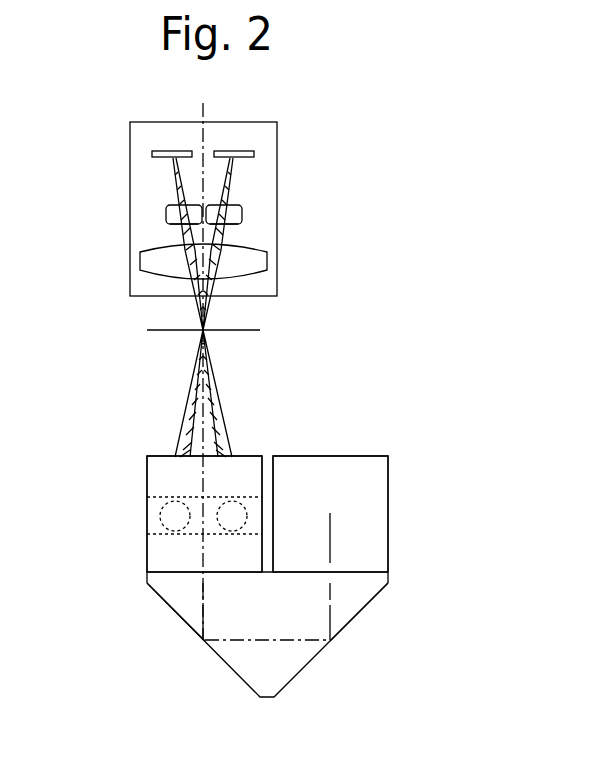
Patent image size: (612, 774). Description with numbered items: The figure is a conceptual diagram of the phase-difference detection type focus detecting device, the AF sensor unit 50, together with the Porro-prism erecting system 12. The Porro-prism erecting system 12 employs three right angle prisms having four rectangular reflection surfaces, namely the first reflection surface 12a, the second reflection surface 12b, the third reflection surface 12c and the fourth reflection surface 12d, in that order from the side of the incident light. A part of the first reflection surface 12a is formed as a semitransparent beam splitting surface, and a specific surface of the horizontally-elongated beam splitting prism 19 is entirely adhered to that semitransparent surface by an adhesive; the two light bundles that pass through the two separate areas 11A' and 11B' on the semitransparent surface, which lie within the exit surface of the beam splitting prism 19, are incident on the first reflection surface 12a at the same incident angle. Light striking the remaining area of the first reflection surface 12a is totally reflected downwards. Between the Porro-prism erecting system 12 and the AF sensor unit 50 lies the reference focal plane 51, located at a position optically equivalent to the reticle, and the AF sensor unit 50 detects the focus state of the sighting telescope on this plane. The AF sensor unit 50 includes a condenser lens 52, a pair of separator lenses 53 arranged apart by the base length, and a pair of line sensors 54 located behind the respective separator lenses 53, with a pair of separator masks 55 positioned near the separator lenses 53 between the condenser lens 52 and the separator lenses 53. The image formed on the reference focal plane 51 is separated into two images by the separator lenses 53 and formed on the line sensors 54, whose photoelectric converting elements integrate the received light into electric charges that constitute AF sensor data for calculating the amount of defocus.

The AF sensor unit 50 is at (302, 145).
The line sensors 54 is at (178, 149).
The separator lenses 53 is at (165, 212).
The separator masks 55 is at (172, 232).
The condenser lens 52 is at (257, 263).
The reference focal plane 51 is at (240, 331).
The Porro-prism erecting system 12 is at (443, 571).
The first reflection surface 12a is at (150, 480).
The fourth reflection surface 12d is at (375, 480).
The beam splitting prism 19 is at (147, 510).
The separate area 11A' is at (113, 532).
The separate area 11B' is at (274, 457).
The second reflection surface 12b is at (209, 648).
The third reflection surface 12c is at (327, 643).